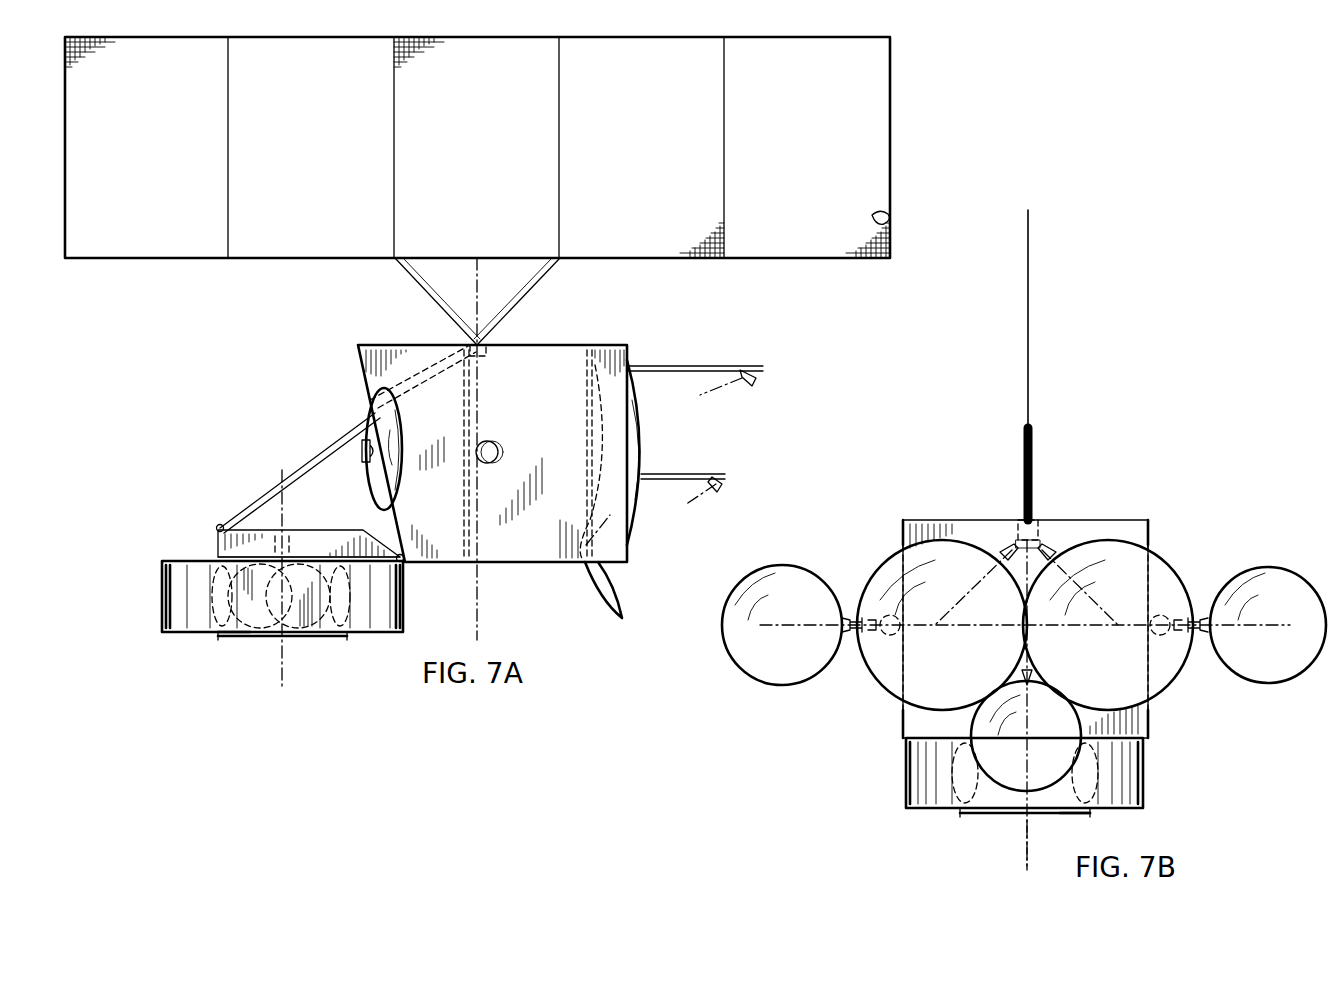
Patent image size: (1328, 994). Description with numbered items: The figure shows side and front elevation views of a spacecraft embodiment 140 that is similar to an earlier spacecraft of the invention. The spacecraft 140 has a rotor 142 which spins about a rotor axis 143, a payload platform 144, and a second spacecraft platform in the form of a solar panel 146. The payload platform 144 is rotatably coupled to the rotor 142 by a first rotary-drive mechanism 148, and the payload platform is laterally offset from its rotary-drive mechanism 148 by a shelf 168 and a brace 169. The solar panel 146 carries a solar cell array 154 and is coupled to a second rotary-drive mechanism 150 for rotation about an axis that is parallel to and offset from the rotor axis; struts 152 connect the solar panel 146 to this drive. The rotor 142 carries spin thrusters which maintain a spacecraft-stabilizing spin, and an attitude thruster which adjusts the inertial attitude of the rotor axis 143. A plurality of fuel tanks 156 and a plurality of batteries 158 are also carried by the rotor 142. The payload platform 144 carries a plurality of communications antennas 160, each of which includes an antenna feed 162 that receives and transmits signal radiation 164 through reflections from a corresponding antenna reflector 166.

In FIG. 7A, the spacecraft embodiment 140 is at (262, 434).
In FIG. 7B, the spacecraft embodiment 140 is at (1157, 452).
In FIG. 7A, the rotor 142 is at (160, 588).
In FIG. 7B, the rotor 142 is at (1150, 800).
In FIG. 7A, the rotor axis 143 is at (380, 517).
In FIG. 7B, the rotor axis 143 is at (1028, 845).
In FIG. 7A, the payload platform 144 is at (360, 378).
In FIG. 7B, the payload platform 144 is at (1152, 535).
In FIG. 7A, the solar panel 146 is at (333, 265).
In FIG. 7B, the solar panel 146 is at (1034, 340).
In FIG. 7A, the first rotary-drive mechanism 148 is at (282, 542).
In FIG. 7A, the second rotary-drive mechanism 150 is at (486, 356).
In FIG. 7B, the second rotary-drive mechanism 150 is at (1036, 520).
In FIG. 7A, the array support struts 152 is at (432, 302).
In FIG. 7B, the array support struts 152 is at (1034, 442).
In FIG. 7A, the solar cell array 154 is at (888, 216).
In FIG. 7A, the fuel tanks 156 is at (340, 642).
In FIG. 7B, the fuel tanks 156 is at (962, 814).
In FIG. 7A, the batteries 158 is at (236, 642).
In FIG. 7B, the batteries 158 is at (1100, 814).
In FIG. 7A, the communications antennas 160 is at (640, 385).
In FIG. 7B, the communications antennas 160 is at (770, 686).
In FIG. 7A, the antenna feed 162 is at (487, 441).
In FIG. 7B, the antenna feed 162 is at (1040, 545).
In FIG. 7A, the signal radiation 164 is at (476, 452).
In FIG. 7B, the signal radiation 164 is at (794, 625).
In FIG. 7A, the antenna reflector 166 is at (400, 478).
In FIG. 7B, the antenna reflector 166 is at (826, 580).
In FIG. 7A, the shelf 168 is at (216, 536).
In FIG. 7A, the brace 169 is at (284, 468).